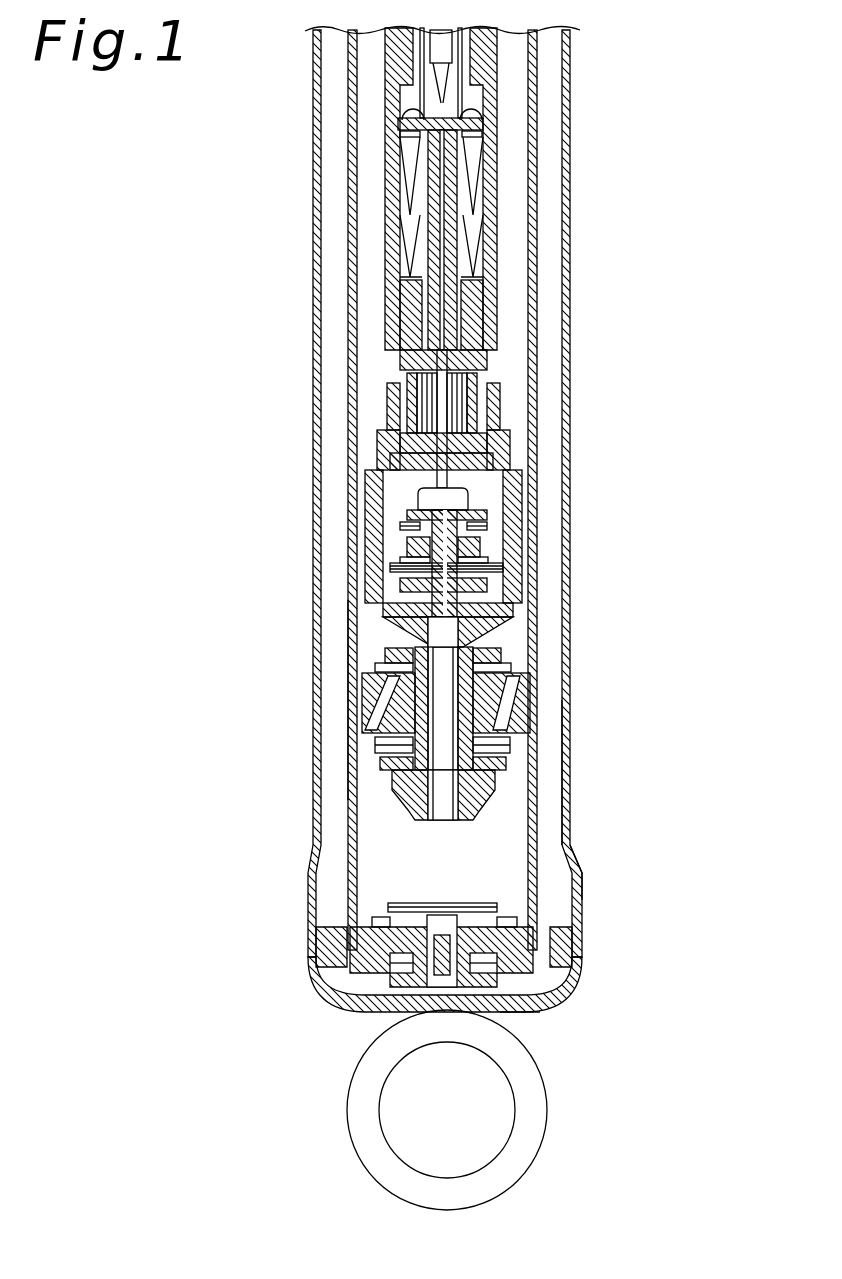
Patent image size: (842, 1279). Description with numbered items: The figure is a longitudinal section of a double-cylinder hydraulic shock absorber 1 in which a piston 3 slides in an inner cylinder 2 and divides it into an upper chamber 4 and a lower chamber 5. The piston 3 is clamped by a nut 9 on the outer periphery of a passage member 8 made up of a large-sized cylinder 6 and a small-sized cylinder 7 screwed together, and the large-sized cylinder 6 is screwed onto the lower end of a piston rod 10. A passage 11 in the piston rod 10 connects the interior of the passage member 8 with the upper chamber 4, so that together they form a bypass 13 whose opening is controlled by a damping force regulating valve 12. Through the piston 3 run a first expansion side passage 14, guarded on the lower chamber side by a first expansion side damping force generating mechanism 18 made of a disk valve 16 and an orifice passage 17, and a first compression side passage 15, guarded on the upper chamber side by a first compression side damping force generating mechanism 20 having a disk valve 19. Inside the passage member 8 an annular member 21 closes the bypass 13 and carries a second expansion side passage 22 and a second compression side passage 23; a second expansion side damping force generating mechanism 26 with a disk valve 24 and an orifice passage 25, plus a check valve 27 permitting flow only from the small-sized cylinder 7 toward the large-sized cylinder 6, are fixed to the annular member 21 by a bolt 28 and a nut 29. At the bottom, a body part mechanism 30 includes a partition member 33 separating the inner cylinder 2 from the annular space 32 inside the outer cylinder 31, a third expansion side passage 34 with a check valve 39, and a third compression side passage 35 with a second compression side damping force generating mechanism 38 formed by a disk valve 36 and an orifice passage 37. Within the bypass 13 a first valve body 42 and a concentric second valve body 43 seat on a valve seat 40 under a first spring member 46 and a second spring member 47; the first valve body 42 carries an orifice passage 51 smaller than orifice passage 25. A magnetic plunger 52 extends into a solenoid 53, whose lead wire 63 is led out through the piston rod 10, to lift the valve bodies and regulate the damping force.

The hydraulic shock absorber 1 is at (236, 153).
The inner cylinder 2 is at (556, 846).
The piston 3 is at (531, 718).
The upper chamber 4 is at (512, 240).
The lower chamber 5 is at (513, 888).
The large-sized cylinder 6 is at (511, 490).
The small-sized cylinder 7 is at (512, 640).
The passage member 8 is at (506, 585).
The nut 9 is at (501, 800).
The piston rod 10 is at (496, 318).
The passage 11 is at (490, 420).
The damping force regulating valve 12 is at (486, 386).
The bypass 13 is at (506, 510).
The first expansion side passage 14 is at (516, 700).
The first compression side passage 15 is at (374, 716).
The disk valve 16 is at (501, 778).
The orifice passage 17 is at (511, 755).
The first expansion side damping force generating mechanism 18 is at (521, 761).
The disk valve 19 is at (516, 660).
The first compression side damping force generating mechanism 20 is at (506, 666).
The annular member 21 is at (386, 536).
The second expansion side passage 22 is at (501, 540).
The second compression side passage 23 is at (384, 560).
The disk valve 24 is at (506, 600).
The orifice passage 25 is at (499, 557).
The second expansion side damping force generating mechanism 26 is at (382, 580).
The check valve 27 is at (381, 505).
The bolt 28 is at (401, 600).
The nut 29 is at (396, 630).
The body part mechanism 30 is at (376, 886).
The outer cylinder 31 is at (541, 828).
The annular space 32 is at (553, 872).
The partition member 33 is at (356, 950).
The third expansion side passage 34 is at (521, 942).
The third compression side passage 35 is at (521, 966).
The disk valve 36 is at (500, 1013).
The orifice passage 37 is at (531, 1000).
The second compression side damping force generating mechanism 38 is at (521, 1010).
The check valve 39 is at (519, 910).
The valve seat 40 is at (376, 470).
The first valve body 42 is at (398, 410).
The second valve body 43 is at (381, 440).
The first spring member 46 is at (396, 374).
The second spring member 47 is at (398, 378).
The orifice passage 51 is at (521, 466).
The plunger 52 is at (398, 256).
The solenoid 53 is at (398, 200).
The lead wire 63 is at (452, 76).